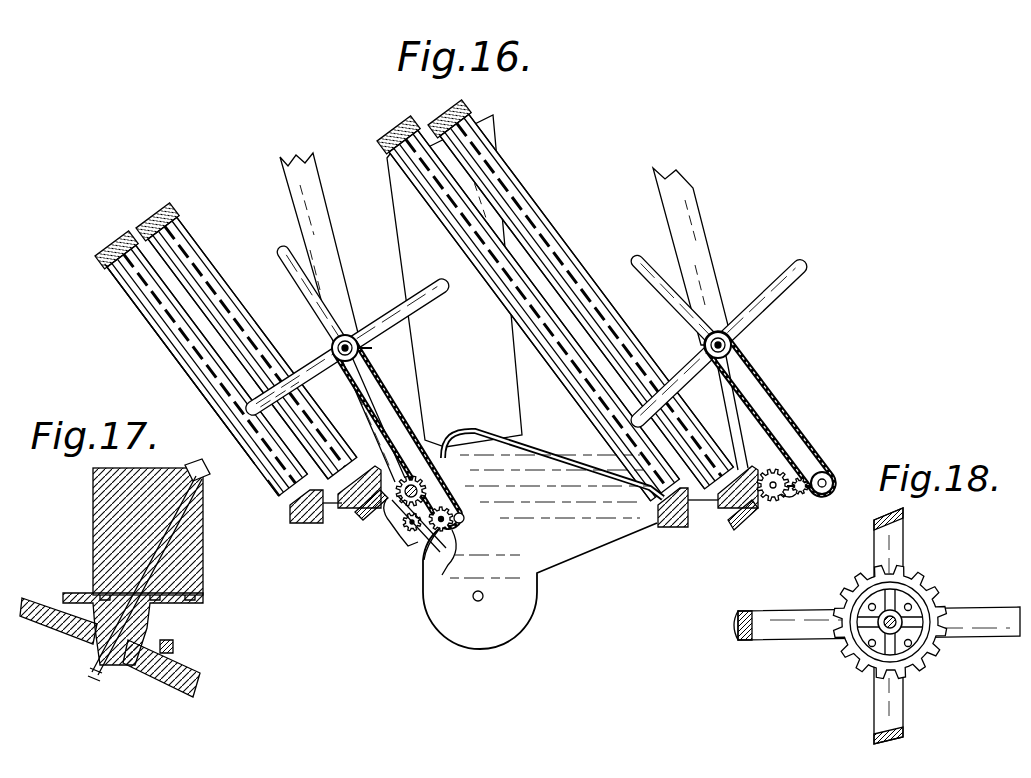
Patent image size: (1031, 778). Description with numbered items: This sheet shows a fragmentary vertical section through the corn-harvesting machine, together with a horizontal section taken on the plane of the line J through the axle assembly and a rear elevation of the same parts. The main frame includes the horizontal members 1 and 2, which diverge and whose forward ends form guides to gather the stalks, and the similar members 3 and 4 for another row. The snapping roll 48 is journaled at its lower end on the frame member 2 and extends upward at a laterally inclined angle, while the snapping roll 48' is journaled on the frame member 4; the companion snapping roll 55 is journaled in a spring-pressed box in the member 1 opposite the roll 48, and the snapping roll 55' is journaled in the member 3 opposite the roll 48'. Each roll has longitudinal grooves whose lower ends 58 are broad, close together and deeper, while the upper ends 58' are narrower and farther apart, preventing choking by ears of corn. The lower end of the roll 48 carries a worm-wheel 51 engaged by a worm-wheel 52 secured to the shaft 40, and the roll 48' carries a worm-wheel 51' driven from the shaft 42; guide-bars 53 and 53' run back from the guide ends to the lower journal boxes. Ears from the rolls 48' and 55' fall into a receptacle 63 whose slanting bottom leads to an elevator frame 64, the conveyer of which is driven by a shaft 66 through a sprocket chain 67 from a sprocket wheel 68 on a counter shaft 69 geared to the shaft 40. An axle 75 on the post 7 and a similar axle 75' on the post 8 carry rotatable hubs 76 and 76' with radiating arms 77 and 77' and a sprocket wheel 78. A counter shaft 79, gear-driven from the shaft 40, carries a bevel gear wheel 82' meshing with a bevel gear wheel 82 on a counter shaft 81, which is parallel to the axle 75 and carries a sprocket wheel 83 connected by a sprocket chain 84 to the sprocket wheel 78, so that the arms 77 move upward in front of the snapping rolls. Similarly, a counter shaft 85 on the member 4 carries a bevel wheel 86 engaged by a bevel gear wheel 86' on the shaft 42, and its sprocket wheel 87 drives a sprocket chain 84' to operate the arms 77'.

In FIG. 16, the horizontal frame member 1 is at (289, 512).
In FIG. 16, the horizontal frame member 2 is at (352, 455).
In FIG. 16, the frame member 3 is at (656, 508).
In FIG. 16, the frame member 4 is at (726, 452).
In FIG. 16, the post 7 is at (298, 170).
In FIG. 17, the post 7 is at (107, 493).
In FIG. 16, the post 8 is at (671, 186).
In FIG. 16, the shaft 40 is at (428, 490).
In FIG. 16, the shaft 42 is at (773, 502).
In FIG. 16, the snapping roll 48 is at (247, 329).
In FIG. 16, the snapping roll 48' is at (582, 286).
In FIG. 16, the worm-wheel 51 is at (346, 527).
In FIG. 16, the worm-wheel 51' is at (740, 529).
In FIG. 16, the worm-wheel 52 is at (438, 452).
In FIG. 16, the guide-bar 53 is at (326, 510).
In FIG. 16, the guide-bar 53' is at (716, 511).
In FIG. 16, the snapping roll 55 is at (199, 354).
In FIG. 16, the snapping roll 55' is at (529, 295).
In FIG. 16, the lower groove ends 58 is at (258, 487).
In FIG. 16, the upper groove ends 58' is at (165, 364).
In FIG. 16, the receptacle 63 is at (563, 564).
In FIG. 16, the elevator frame 64 is at (398, 186).
In FIG. 16, the shaft 66 is at (484, 597).
In FIG. 16, the sprocket chain 67 is at (424, 558).
In FIG. 16, the sprocket wheel 68 is at (404, 546).
In FIG. 16, the counter shaft 69 is at (393, 535).
In FIG. 16, the axle 75 is at (319, 344).
In FIG. 17, the axle 75 is at (142, 582).
In FIG. 18, the axle 75 is at (854, 600).
In FIG. 16, the axle 75' is at (693, 344).
In FIG. 16, the hub 76 is at (327, 300).
In FIG. 17, the hub 76 is at (58, 633).
In FIG. 18, the hub 76 is at (911, 621).
In FIG. 16, the hub 76' is at (718, 306).
In FIG. 16, the arms 77 is at (347, 334).
In FIG. 17, the arms 77 is at (178, 668).
In FIG. 18, the arms 77 is at (877, 641).
In FIG. 16, the arms 77' is at (719, 340).
In FIG. 17, the sprocket wheel 78 is at (168, 650).
In FIG. 18, the sprocket wheel 78 is at (866, 664).
In FIG. 16, the counter shaft 79 is at (410, 533).
In FIG. 16, the counter shaft 81 is at (452, 548).
In FIG. 16, the bevel gear wheel 82 is at (469, 515).
In FIG. 16, the bevel gear wheel 82' is at (423, 584).
In FIG. 16, the sprocket wheel 83 is at (466, 530).
In FIG. 16, the sprocket chain 84 is at (397, 432).
In FIG. 16, the sprocket chain 84' is at (781, 414).
In FIG. 16, the counter shaft 85 is at (806, 496).
In FIG. 16, the bevel wheel 86 is at (810, 531).
In FIG. 16, the bevel gear wheel 86' is at (782, 537).
In FIG. 16, the sprocket wheel 87 is at (826, 470).
In FIG. 16, the section plane line J is at (363, 349).